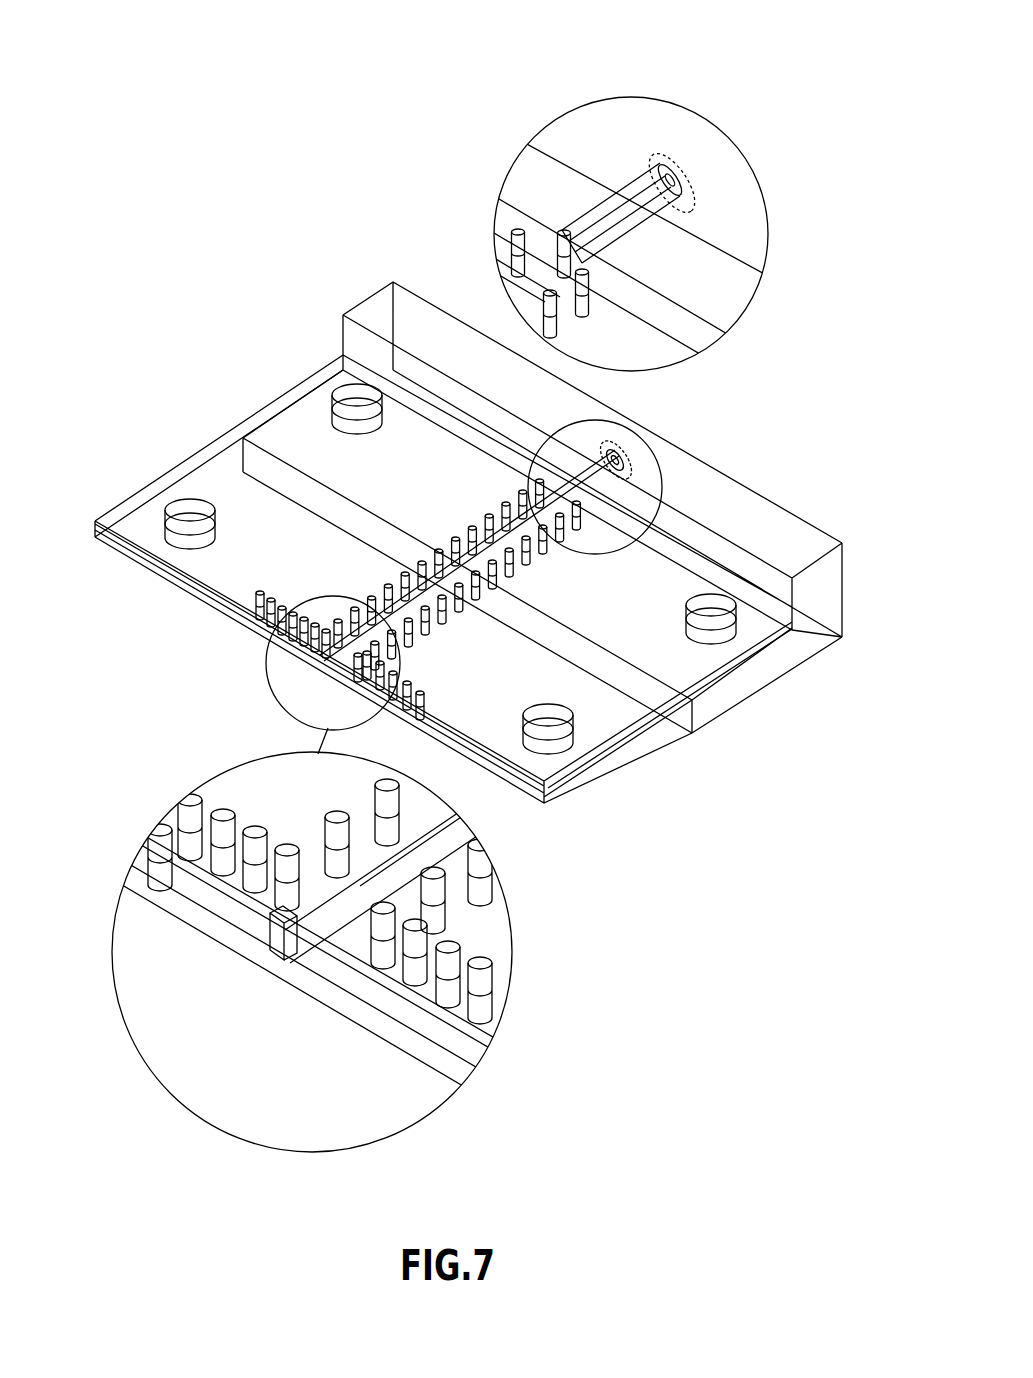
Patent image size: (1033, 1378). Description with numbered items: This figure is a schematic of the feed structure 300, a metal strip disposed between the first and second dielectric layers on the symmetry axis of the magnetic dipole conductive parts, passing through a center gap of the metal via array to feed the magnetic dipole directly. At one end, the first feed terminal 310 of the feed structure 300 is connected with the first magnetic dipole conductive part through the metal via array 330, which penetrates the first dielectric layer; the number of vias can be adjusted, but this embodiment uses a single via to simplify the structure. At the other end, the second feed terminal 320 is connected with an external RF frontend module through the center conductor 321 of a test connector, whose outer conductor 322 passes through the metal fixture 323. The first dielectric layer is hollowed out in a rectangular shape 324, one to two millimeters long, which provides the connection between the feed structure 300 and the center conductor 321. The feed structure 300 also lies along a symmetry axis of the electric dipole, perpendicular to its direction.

The feed structure 300 is at (350, 905).
The first feed terminal 310 is at (280, 943).
The second feed terminal 320 is at (512, 262).
The center conductor 321 is at (671, 180).
The outer conductor 322 is at (630, 194).
The metal fixture 323 is at (800, 603).
The rectangular shape 324 is at (532, 295).
The metal via array 330 is at (245, 948).